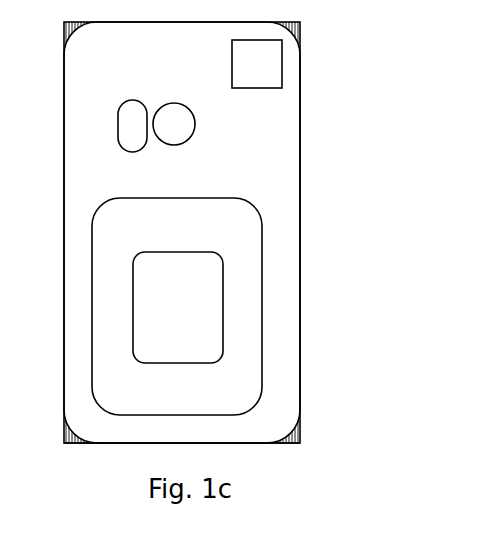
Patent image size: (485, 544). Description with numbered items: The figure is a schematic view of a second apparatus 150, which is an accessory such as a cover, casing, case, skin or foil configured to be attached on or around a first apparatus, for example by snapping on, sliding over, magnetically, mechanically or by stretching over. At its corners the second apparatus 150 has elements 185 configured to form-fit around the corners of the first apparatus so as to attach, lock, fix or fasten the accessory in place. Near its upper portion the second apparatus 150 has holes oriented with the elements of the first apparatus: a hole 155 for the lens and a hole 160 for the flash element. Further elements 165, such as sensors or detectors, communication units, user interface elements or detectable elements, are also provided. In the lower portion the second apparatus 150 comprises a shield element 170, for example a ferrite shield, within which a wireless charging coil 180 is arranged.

The second apparatus 150 is at (377, 60).
The hole 155 is at (190, 123).
The hole 160 is at (127, 122).
The further elements 165 is at (233, 65).
The shield element 170 is at (127, 218).
The wireless charging coil 180 is at (152, 262).
The elements configured to form-fit around the corners 185 is at (70, 446).